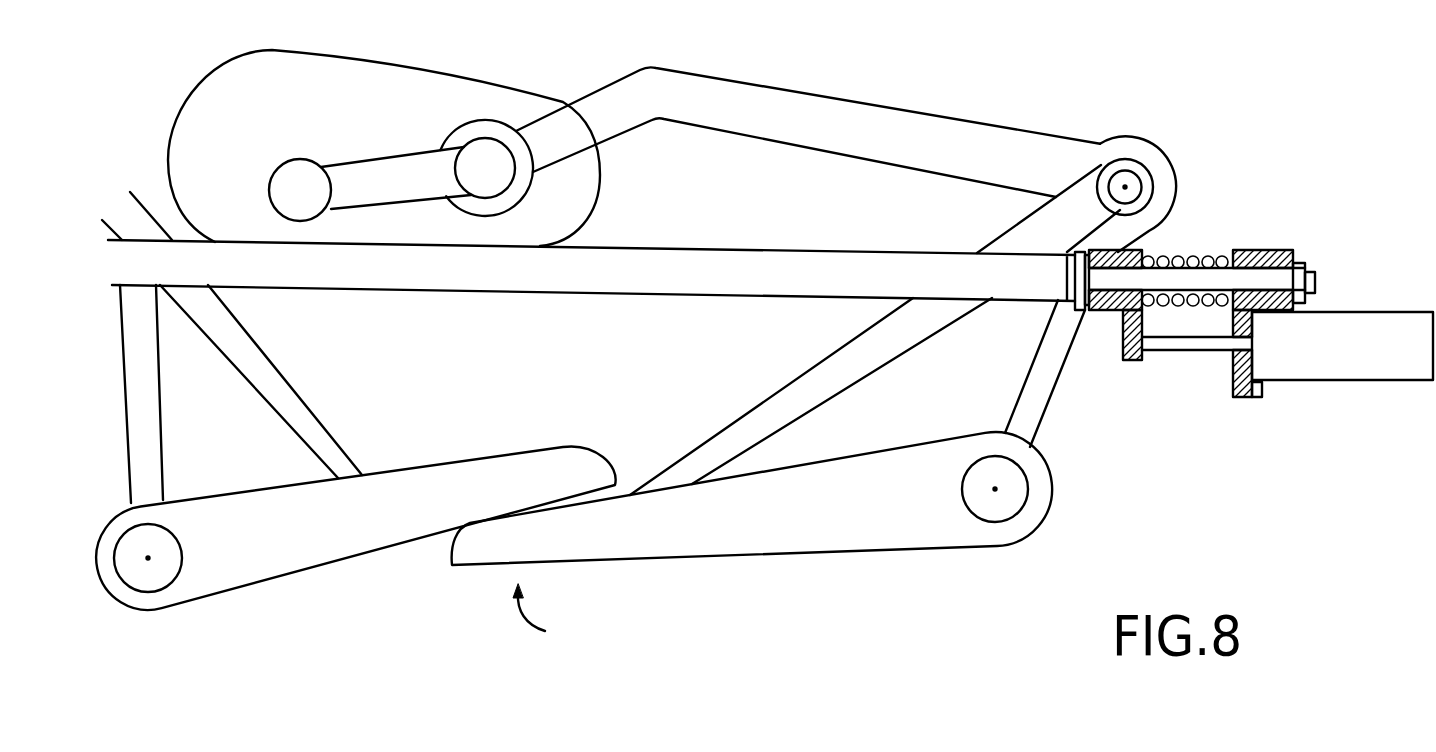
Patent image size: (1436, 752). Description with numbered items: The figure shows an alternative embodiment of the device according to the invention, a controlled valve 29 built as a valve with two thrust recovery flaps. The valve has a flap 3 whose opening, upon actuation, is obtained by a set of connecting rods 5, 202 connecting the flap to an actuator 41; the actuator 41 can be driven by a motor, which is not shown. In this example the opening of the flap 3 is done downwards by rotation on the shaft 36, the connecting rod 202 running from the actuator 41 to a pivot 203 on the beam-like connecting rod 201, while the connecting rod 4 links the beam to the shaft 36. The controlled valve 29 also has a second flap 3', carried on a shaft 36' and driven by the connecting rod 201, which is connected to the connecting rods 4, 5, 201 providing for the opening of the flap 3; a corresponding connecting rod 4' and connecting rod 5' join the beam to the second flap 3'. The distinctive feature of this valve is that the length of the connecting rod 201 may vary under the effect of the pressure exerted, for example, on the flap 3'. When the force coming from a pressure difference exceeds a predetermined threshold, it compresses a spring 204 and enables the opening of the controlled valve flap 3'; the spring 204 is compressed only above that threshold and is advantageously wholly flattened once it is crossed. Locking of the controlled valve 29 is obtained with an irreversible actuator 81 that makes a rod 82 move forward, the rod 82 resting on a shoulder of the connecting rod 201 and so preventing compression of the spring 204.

The actuator 41 is at (402, 66).
The connecting rod 201 is at (553, 287).
The connecting rod 202 is at (715, 135).
The pivot 203 is at (1125, 187).
The spring 204 is at (1208, 253).
The rod 82 is at (1177, 347).
The irreversible actuator 81 is at (1375, 381).
The connecting rod 4 is at (1049, 373).
The arm 4' is at (156, 394).
The connecting rod 5 is at (811, 396).
The strut 5' is at (261, 381).
The flap 3 is at (752, 514).
The second flap 3' is at (355, 528).
The shaft 36 is at (1027, 490).
The pivot 36' is at (174, 576).
The controlled valve 29 is at (544, 616).